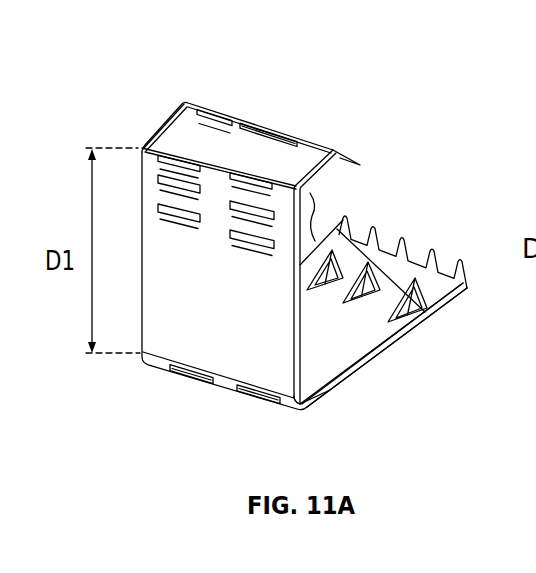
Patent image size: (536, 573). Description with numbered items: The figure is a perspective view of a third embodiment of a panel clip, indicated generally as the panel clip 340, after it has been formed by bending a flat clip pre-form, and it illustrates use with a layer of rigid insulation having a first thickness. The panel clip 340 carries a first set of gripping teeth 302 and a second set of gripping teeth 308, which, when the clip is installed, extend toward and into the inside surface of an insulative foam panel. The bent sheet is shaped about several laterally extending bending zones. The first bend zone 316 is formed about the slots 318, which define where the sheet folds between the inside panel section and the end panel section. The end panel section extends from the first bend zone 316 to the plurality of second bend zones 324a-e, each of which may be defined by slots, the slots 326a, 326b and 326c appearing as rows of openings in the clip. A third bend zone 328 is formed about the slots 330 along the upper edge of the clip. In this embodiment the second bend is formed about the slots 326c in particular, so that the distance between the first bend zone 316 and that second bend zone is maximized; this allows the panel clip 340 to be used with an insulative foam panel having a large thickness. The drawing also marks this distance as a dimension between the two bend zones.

The panel clip 340 is at (394, 50).
The third bend zone 328 is at (177, 98).
The slots 330 is at (208, 112).
The slots 326c is at (300, 142).
The slots 326b is at (230, 209).
The slots 326a is at (273, 246).
The gripping teeth 302 is at (317, 227).
The second bending zones 324a-e is at (428, 310).
The gripping teeth 308 is at (422, 331).
The first bending zone 316 is at (337, 395).
The slots 318 is at (193, 378).